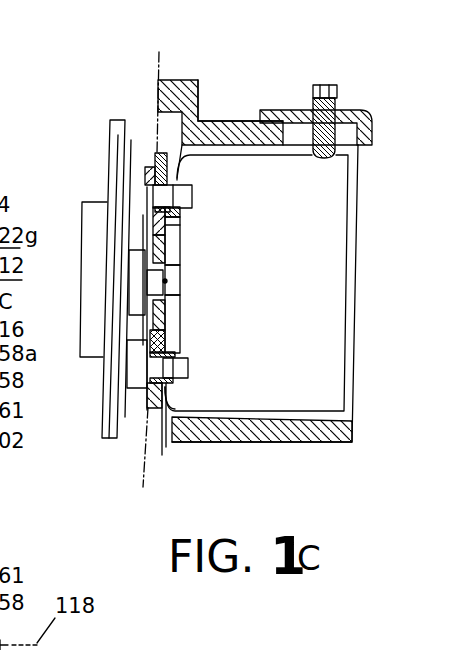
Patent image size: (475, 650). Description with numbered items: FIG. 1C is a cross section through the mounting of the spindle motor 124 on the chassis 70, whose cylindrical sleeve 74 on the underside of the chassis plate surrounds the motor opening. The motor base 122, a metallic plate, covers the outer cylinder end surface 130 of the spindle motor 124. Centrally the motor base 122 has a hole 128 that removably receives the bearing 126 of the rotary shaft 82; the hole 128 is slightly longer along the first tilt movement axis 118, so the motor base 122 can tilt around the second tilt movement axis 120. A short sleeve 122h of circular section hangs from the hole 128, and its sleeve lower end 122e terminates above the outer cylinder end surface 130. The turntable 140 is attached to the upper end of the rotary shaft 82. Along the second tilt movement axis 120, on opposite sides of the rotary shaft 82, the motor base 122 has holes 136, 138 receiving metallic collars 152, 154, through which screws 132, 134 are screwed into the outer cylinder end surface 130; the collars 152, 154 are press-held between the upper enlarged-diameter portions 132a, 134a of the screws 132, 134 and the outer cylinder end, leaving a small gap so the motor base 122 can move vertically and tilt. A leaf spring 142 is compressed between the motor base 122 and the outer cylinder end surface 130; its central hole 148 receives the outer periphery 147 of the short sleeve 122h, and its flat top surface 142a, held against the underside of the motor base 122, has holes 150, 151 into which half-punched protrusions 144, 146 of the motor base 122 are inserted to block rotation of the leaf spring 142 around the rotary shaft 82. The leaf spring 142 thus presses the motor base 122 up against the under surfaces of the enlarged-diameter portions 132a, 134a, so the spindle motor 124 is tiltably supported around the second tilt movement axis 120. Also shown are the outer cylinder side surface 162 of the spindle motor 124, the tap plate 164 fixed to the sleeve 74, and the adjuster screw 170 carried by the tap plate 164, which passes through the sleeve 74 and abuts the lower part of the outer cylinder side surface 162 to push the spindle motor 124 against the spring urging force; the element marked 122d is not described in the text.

The chassis 70 is at (200, 88).
The cylindrical sleeve 74 is at (300, 435).
The rotary shaft 82 is at (147, 288).
The first tilt movement axis 118 is at (176, 292).
The second tilt movement axis 120 is at (160, 65).
The motor base 122 is at (149, 150).
The hub recess 122d is at (128, 258).
The sleeve lower end 122e is at (185, 256).
The short sleeve 122h is at (180, 233).
The spindle motor 124 is at (328, 363).
The bearing 126 is at (180, 302).
The hole 128 is at (180, 264).
The outer cylinder end surface 130 is at (173, 394).
The screw 132 is at (162, 192).
The upper enlarged-diameter portion 132a is at (162, 204).
The screw 134 is at (163, 366).
The upper enlarged-diameter portion 134a is at (140, 387).
The hole 136 is at (146, 166).
The hole 138 is at (137, 370).
The turntable 140 is at (110, 120).
The leaf spring 142 is at (192, 190).
The flat top surface 142a is at (153, 243).
The protrusion 144 is at (182, 220).
The protrusion 146 is at (180, 340).
The outer periphery 147 is at (180, 320).
The hole 148 is at (180, 310).
The hole 150 is at (160, 212).
The hole 151 is at (150, 316).
The metallic collar 152 is at (212, 100).
The metallic collar 154 is at (182, 432).
The outer cylinder side surface 162 is at (260, 417).
The tap plate 164 is at (375, 127).
The adjuster screw 170 is at (338, 92).